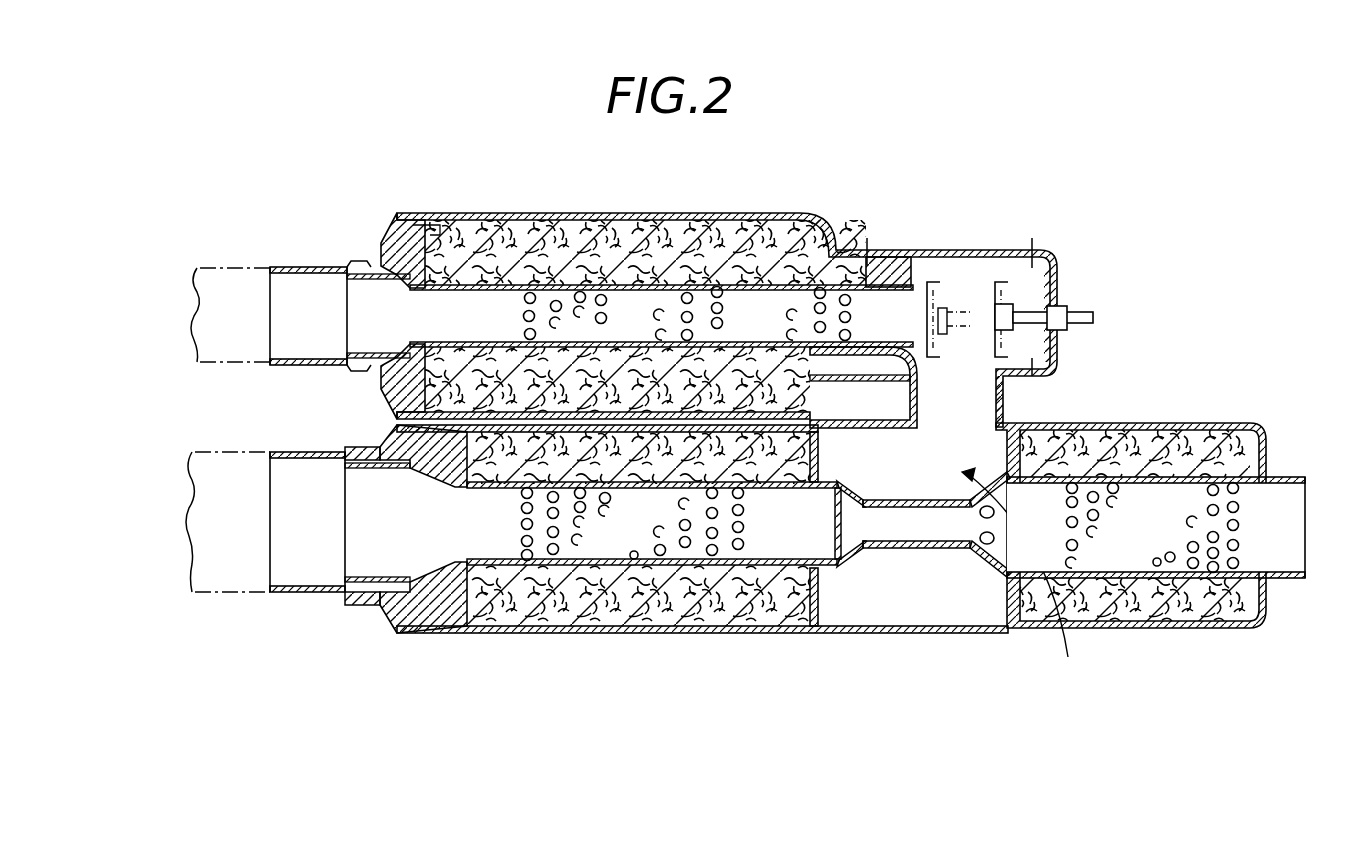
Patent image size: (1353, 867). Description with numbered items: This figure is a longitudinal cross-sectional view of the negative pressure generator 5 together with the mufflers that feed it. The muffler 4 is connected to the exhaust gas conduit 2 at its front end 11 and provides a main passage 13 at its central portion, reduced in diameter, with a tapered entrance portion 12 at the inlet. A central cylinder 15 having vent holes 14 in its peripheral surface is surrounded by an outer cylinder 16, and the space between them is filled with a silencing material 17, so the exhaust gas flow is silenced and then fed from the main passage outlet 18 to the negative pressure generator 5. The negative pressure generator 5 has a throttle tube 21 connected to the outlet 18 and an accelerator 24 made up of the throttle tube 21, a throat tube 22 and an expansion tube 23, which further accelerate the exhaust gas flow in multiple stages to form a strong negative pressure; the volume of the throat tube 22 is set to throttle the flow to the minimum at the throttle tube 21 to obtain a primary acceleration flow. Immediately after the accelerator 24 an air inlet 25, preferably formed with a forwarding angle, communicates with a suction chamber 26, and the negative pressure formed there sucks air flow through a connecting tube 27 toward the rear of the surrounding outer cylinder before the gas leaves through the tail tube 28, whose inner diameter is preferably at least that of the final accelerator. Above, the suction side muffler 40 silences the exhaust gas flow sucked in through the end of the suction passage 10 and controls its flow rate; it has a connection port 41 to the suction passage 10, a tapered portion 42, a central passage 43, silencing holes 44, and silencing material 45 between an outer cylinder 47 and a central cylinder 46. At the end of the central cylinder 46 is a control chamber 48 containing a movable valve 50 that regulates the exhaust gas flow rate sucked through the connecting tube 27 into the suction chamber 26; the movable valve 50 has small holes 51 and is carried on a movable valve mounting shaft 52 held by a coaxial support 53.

The exhaust gas conduit 2 is at (224, 585).
The muffler 4 is at (694, 555).
The negative pressure generator 5 is at (1161, 506).
The suction passage 10 is at (222, 280).
The front end 11 is at (305, 595).
The tapered entrance portion 12 is at (440, 600).
The main passage 13 is at (515, 528).
The vent holes 14 is at (585, 528).
The central cylinder 15 is at (633, 557).
The outer cylinder 16 is at (690, 623).
The silencing material 17 is at (727, 483).
The main passage outlet 18 is at (808, 535).
The throttle tube 21 is at (851, 543).
The throat tube 22 is at (917, 551).
The expansion tube 23 is at (975, 530).
The accelerator 24 is at (959, 598).
The air inlet 25 is at (992, 540).
The suction chamber 26 is at (1021, 577).
The connecting tube 27 is at (1008, 405).
The tail tube 28 is at (1293, 477).
The suction side muffler 40 is at (771, 273).
The connection port 41 is at (312, 271).
The tapered portion 42 is at (428, 237).
The central passage 43 is at (545, 303).
The silencing holes 44 is at (575, 297).
The silencing material 45 is at (653, 245).
The central cylinder 46 is at (690, 245).
The outer cylinder 47 is at (742, 240).
The control chamber 48 is at (920, 300).
The movable valve 50 is at (995, 282).
The small holes 51 is at (1010, 280).
The movable valve mounting shaft 52 is at (1085, 311).
The coaxial support 53 is at (1064, 329).